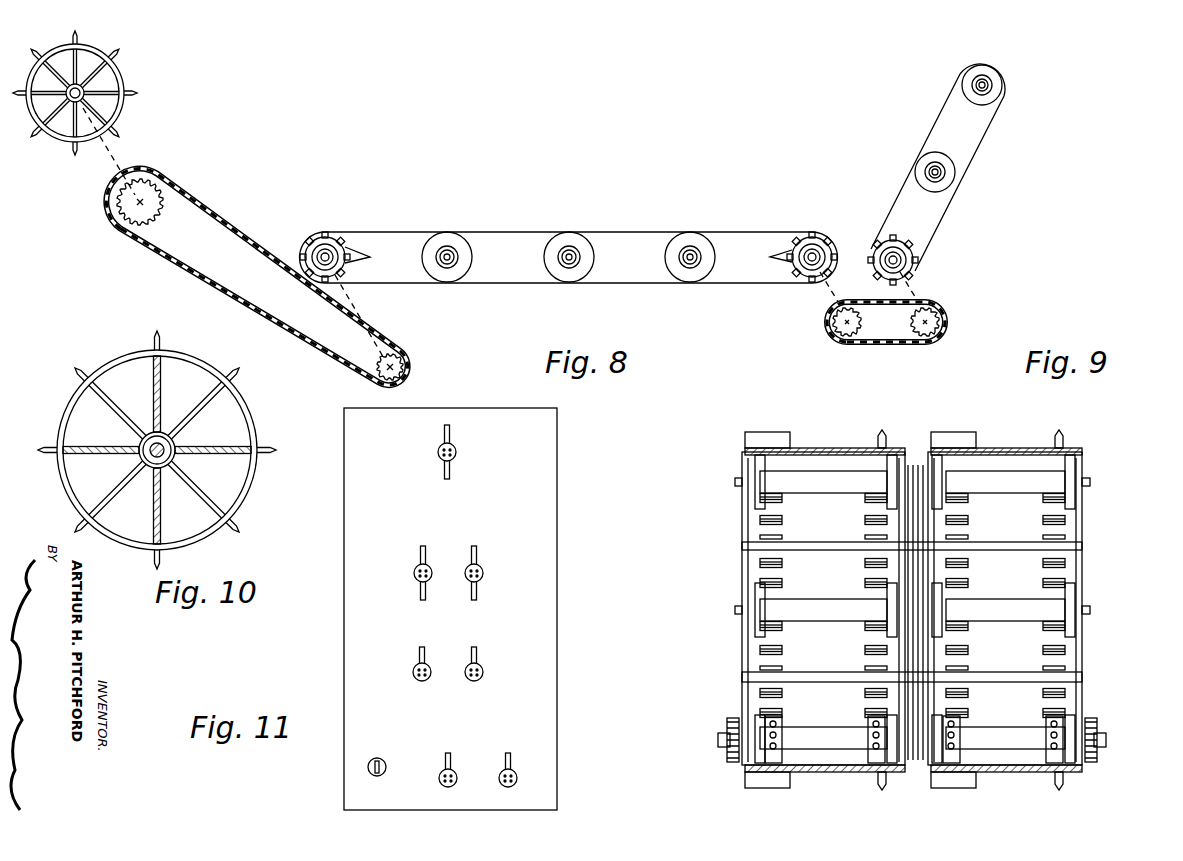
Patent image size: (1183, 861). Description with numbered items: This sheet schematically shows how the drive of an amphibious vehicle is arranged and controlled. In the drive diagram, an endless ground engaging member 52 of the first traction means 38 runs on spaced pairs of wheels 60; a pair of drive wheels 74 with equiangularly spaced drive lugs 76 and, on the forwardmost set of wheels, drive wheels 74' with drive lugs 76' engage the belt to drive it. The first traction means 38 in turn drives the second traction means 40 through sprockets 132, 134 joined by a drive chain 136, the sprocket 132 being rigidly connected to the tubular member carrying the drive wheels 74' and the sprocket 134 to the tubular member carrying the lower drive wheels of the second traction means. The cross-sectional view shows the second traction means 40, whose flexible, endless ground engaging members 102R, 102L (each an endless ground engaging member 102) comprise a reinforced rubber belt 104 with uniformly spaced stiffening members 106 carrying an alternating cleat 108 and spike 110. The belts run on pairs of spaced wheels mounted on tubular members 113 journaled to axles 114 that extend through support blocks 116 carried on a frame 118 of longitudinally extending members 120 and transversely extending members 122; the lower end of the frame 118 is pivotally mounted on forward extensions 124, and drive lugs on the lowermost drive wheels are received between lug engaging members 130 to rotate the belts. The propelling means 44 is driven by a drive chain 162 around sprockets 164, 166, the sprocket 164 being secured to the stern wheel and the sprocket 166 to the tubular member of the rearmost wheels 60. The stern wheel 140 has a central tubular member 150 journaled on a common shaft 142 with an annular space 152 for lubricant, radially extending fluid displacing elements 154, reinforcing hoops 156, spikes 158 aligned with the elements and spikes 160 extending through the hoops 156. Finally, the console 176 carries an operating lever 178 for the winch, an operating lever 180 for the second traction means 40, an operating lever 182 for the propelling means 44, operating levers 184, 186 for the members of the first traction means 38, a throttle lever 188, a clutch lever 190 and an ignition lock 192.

In FIG. 8, the first traction means 38 is at (590, 205).
In FIG. 9, the second traction means 40 is at (1015, 118).
In FIG. 8, the propelling means 44 is at (111, 86).
In FIG. 10, the propelling means 44 is at (165, 437).
In FIG. 8, the endless ground engaging member 52 is at (655, 230).
In FIG. 8, the wheels 60 is at (453, 282).
In FIG. 8, the drive wheels 74 is at (339, 244).
In FIG. 8, the drive wheels 74' is at (812, 242).
In FIG. 8, the drive lugs 76 is at (377, 256).
In FIG. 8, the drive lugs 76' is at (761, 256).
In FIG. 9, the endless ground engaging member 102 is at (964, 164).
In FIG. 9, the left endless ground engaging member 102L is at (800, 412).
In FIG. 9, the right endless ground engaging member 102R is at (1040, 415).
In FIG. 9, the reinforced rubber belt 104 is at (745, 455).
In FIG. 9, the stiffening members 106 is at (838, 447).
In FIG. 9, the cleat 108 is at (765, 435).
In FIG. 9, the spike 110 is at (888, 438).
In FIG. 9, the tubular members 113 is at (835, 496).
In FIG. 9, the axles 114 is at (1092, 482).
In FIG. 9, the support blocks 116 is at (752, 486).
In FIG. 9, the frame 118 is at (738, 650).
In FIG. 9, the longitudinally extending members 120 is at (945, 552).
In FIG. 9, the transversely extending members 122 is at (1082, 546).
In FIG. 9, the forward extensions 124 is at (728, 748).
In FIG. 9, the lug engaging members 130 is at (868, 690).
In FIG. 9, the sprocket 132 is at (855, 345).
In FIG. 9, the sprocket 134 is at (938, 345).
In FIG. 9, the drive chain 136 is at (897, 345).
In FIG. 8, the stern wheel 140 is at (128, 83).
In FIG. 10, the stern wheel 140 is at (165, 437).
In FIG. 10, the common shaft 142 is at (155, 470).
In FIG. 10, the central tubular member 150 is at (178, 441).
In FIG. 10, the annular space 152 is at (166, 460).
In FIG. 10, the fluid displacing elements 154 is at (152, 378).
In FIG. 10, the reinforcing hoops 156 is at (255, 425).
In FIG. 10, the spikes 158 is at (158, 338).
In FIG. 10, the spikes 160 is at (236, 372).
In FIG. 8, the drive chain 162 is at (228, 240).
In FIG. 8, the sprocket 164 is at (140, 218).
In FIG. 8, the sprocket 166 is at (383, 372).
In FIG. 11, the console 176 is at (582, 452).
In FIG. 11, the operating lever 178 is at (436, 452).
In FIG. 11, the operating lever 180 is at (417, 566).
In FIG. 11, the operating lever 182 is at (480, 566).
In FIG. 11, the operating lever 184 is at (417, 660).
In FIG. 11, the operating lever 186 is at (479, 660).
In FIG. 11, the throttle lever 188 is at (443, 768).
In FIG. 11, the clutch lever 190 is at (520, 774).
In FIG. 11, the ignition lock 192 is at (368, 767).